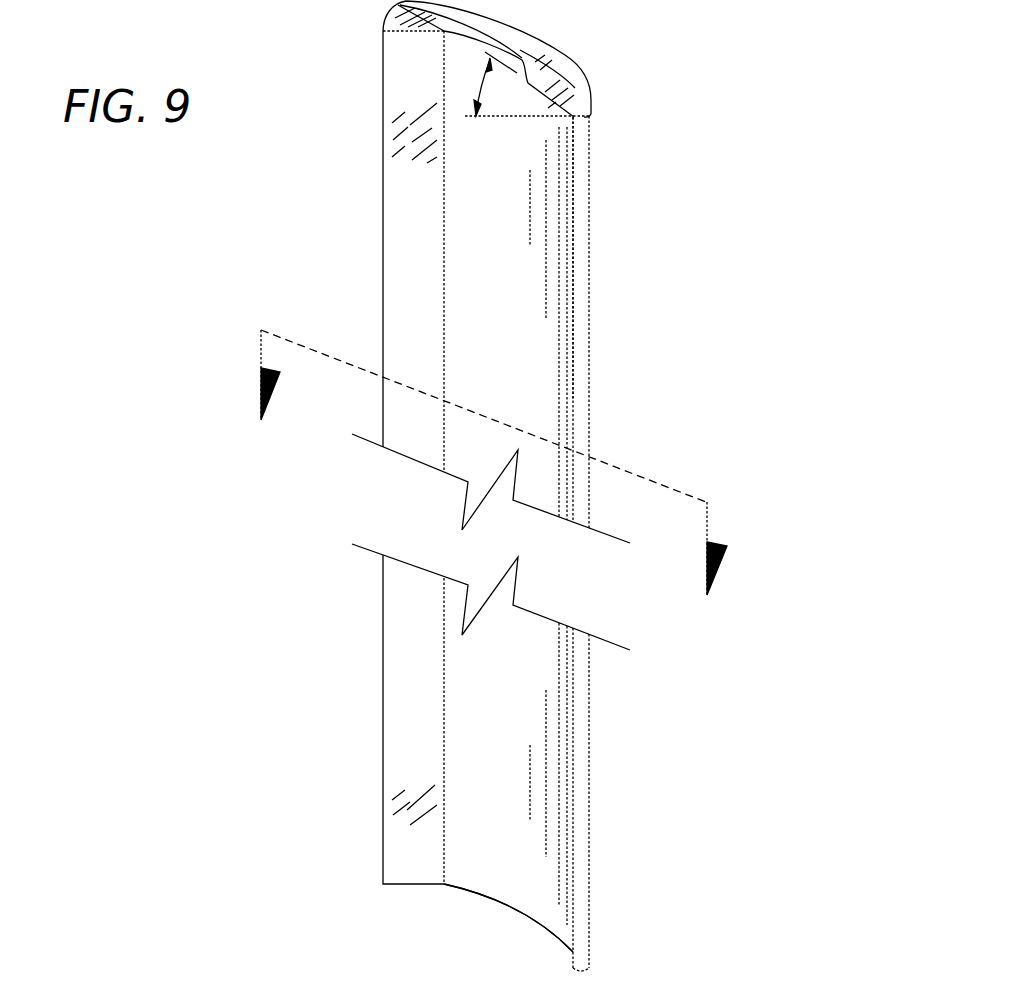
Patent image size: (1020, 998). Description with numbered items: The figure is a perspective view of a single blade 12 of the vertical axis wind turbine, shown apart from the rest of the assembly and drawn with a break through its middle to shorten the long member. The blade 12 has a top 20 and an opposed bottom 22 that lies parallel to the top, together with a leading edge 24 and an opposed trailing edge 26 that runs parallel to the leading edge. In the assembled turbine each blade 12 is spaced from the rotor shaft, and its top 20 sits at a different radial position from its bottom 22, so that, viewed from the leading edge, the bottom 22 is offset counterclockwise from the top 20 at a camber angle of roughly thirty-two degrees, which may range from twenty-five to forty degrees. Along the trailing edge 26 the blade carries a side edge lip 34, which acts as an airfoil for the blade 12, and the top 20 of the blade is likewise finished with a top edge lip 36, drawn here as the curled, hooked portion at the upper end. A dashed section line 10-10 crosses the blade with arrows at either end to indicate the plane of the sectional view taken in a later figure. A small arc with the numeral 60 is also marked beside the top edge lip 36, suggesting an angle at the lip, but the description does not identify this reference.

The section line 10 is at (498, 467).
The blade 12 is at (705, 76).
The top 20 is at (582, 131).
The bottom 22 is at (478, 895).
The leading edge 24 is at (582, 283).
The trailing edge 26 is at (405, 218).
The side edge lip 34 is at (413, 728).
The top edge lip 36 is at (552, 66).
The angle 60 is at (470, 80).